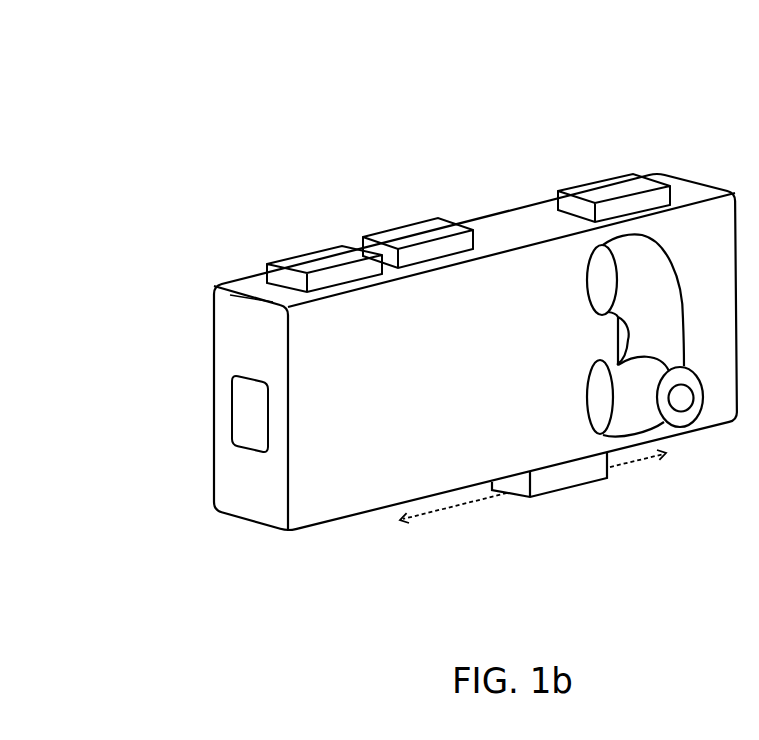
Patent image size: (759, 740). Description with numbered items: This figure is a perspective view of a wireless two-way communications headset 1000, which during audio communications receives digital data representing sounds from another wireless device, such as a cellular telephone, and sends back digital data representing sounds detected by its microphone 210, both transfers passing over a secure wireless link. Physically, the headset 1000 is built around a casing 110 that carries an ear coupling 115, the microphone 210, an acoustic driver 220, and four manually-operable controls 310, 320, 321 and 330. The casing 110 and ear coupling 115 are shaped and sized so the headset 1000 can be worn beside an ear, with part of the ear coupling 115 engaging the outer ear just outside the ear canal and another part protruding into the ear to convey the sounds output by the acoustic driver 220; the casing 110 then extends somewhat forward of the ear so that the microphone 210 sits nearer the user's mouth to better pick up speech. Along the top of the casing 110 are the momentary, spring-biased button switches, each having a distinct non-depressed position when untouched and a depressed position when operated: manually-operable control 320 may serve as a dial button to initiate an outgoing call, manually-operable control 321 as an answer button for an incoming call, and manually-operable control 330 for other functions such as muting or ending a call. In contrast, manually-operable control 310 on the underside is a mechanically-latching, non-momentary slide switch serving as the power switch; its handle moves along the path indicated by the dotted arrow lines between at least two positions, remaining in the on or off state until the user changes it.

The wireless two-way communications headset 1000 is at (331, 54).
The casing 110 is at (401, 392).
The ear coupling 115 is at (598, 277).
The microphone 210 is at (248, 438).
The acoustic driver 220 is at (687, 411).
The manually-operable control 310 is at (550, 483).
The manually-operable control 320 is at (325, 258).
The manually-operable control 321 is at (399, 238).
The manually-operable control 330 is at (605, 186).